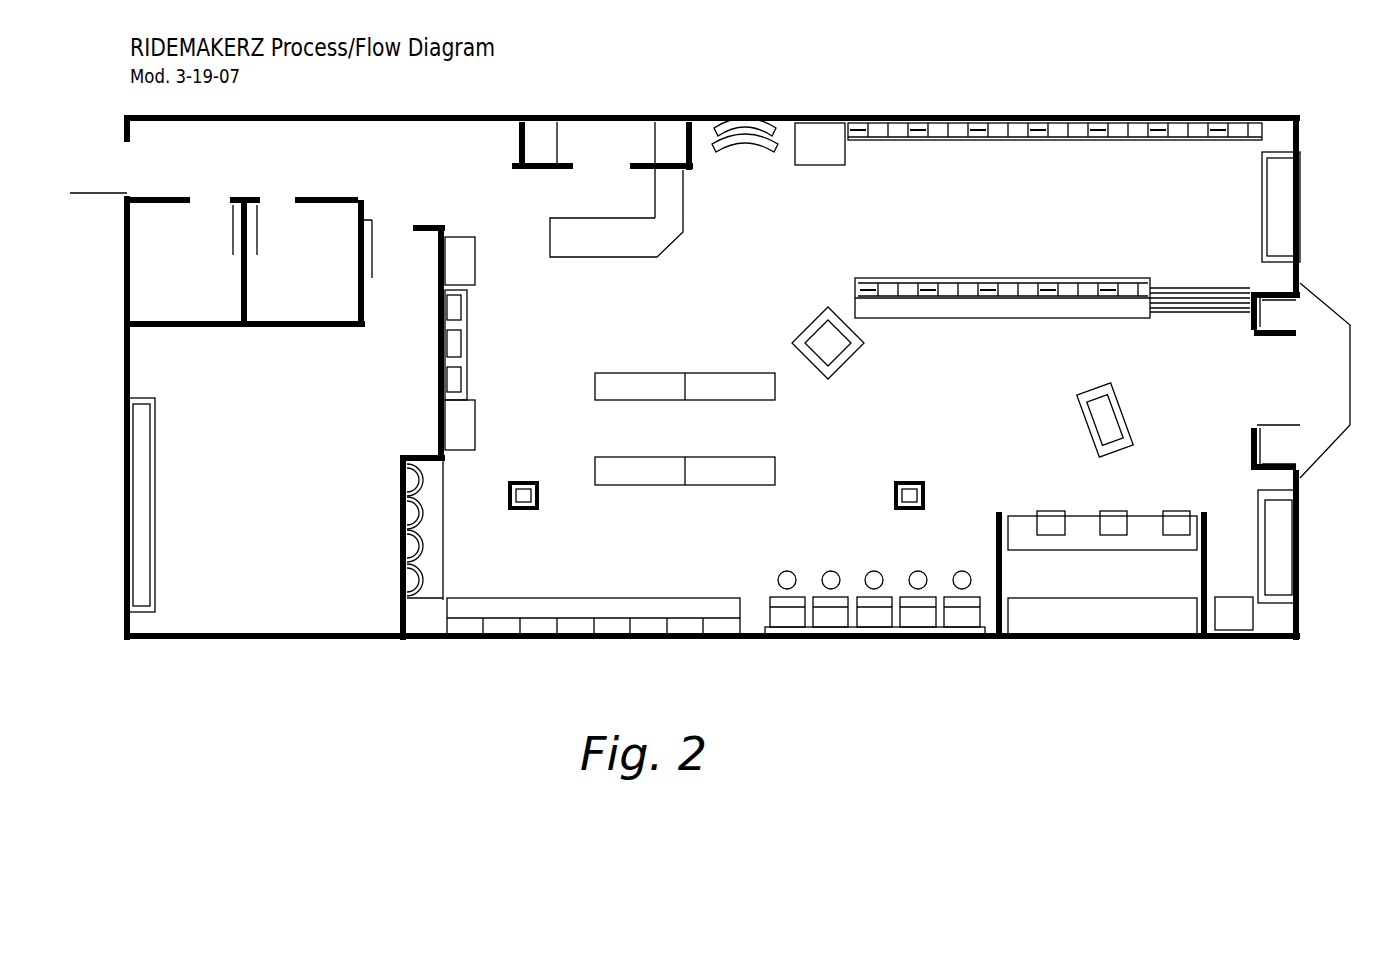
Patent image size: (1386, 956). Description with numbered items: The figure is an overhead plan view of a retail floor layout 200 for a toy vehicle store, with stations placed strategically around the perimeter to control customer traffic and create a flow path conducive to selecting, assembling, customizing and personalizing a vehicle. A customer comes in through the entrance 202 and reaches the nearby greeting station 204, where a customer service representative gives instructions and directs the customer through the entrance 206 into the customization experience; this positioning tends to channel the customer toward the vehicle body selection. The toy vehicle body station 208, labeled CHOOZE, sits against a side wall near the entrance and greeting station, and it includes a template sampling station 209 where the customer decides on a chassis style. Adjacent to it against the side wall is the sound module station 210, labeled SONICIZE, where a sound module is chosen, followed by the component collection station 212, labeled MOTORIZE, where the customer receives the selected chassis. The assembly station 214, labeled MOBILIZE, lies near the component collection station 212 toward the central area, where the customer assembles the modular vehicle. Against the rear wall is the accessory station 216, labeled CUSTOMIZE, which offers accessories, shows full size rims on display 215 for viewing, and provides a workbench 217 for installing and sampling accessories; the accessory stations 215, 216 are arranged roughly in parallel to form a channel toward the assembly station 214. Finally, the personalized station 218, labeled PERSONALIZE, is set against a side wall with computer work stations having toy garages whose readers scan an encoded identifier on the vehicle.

The retail floor layout 200 is at (766, 60).
The entrance 202 is at (1280, 377).
The greeting station 204 is at (1133, 416).
The entrance 206 is at (1180, 320).
The toy vehicle body station 208 is at (997, 158).
The template sampling station 209 is at (830, 176).
The sound module station 210 is at (746, 200).
The component collection station 212 is at (668, 254).
The assembly station 214 is at (618, 348).
The rims on display 215 is at (487, 293).
The accessory station 216 is at (515, 545).
The workbench 217 is at (735, 450).
The personalized station 218 is at (852, 512).